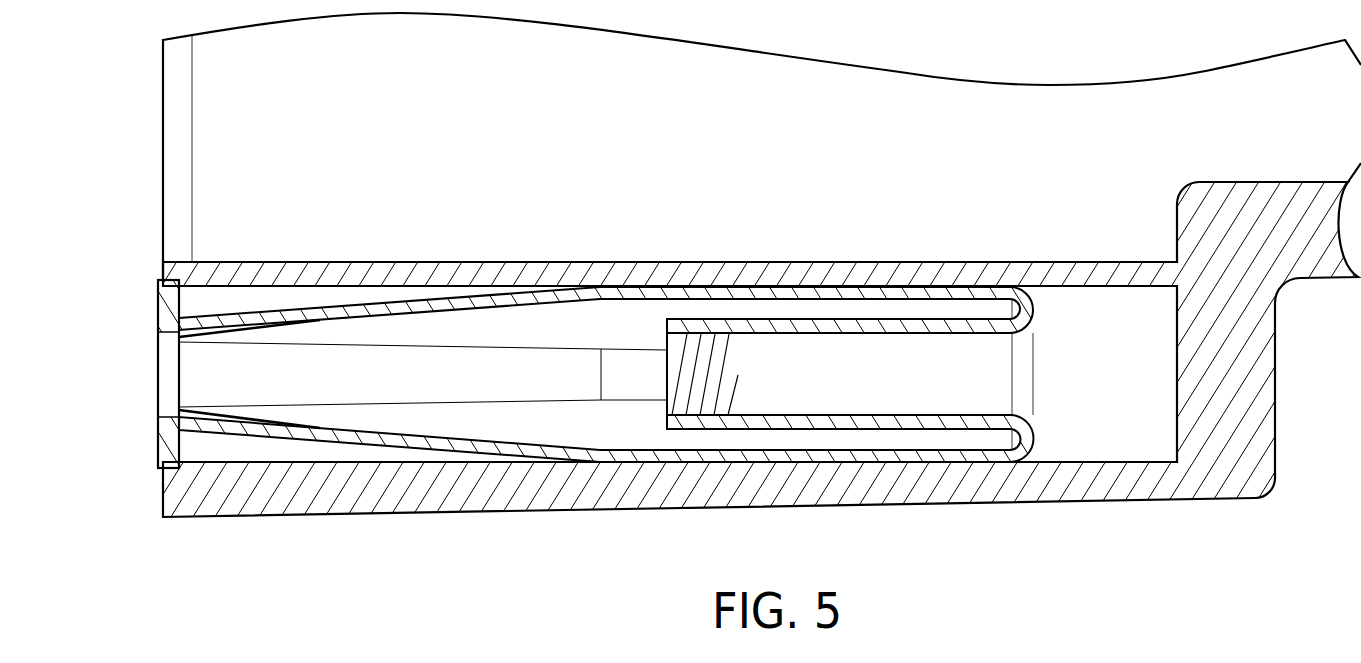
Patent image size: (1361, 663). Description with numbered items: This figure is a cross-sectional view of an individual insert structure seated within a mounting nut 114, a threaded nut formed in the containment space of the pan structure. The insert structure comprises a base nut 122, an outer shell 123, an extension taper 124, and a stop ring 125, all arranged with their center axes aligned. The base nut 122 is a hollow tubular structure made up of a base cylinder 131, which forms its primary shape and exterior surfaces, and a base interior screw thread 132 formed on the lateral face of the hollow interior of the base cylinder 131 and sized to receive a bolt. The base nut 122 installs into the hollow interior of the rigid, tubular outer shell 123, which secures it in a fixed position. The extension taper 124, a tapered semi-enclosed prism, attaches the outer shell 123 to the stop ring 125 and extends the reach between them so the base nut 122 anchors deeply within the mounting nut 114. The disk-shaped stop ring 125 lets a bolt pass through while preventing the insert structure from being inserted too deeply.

The mounting nut 114 is at (1097, 421).
The base nut 122 is at (850, 278).
The outer shell 123 is at (923, 457).
The extension taper 124 is at (433, 292).
The stop ring 125 is at (170, 303).
The base cylinder 131 is at (795, 333).
The base interior screw thread 132 is at (719, 303).